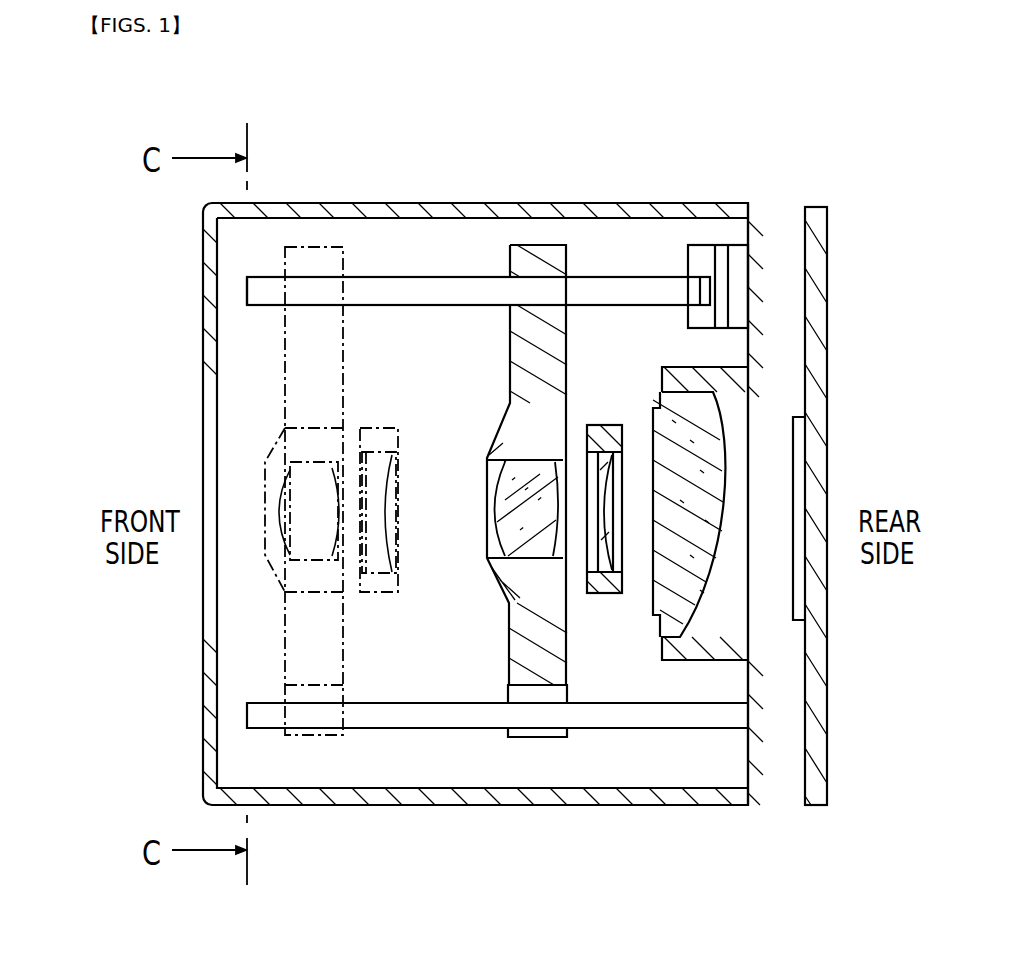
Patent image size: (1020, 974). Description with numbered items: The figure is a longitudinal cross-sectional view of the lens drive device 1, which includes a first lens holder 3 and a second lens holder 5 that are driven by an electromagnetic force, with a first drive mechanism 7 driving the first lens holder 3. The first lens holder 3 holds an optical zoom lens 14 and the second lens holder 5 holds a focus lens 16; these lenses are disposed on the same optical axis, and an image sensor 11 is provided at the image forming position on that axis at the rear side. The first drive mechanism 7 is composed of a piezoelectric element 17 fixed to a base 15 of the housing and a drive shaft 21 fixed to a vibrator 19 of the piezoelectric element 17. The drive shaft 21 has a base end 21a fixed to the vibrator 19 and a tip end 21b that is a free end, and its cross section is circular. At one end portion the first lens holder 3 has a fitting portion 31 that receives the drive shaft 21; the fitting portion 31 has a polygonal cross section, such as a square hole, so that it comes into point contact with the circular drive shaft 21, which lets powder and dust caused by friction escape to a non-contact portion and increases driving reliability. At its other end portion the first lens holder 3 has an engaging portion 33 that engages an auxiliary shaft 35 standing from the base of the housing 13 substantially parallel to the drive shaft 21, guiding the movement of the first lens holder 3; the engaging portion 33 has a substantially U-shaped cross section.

The lens drive device 1 is at (356, 166).
The first lens holder 3 is at (515, 245).
The second lens holder 5 is at (398, 508).
The first drive mechanism 7 is at (638, 248).
The image sensor 11 is at (798, 466).
The housing 13 is at (282, 200).
The optical zoom lens 14 is at (492, 546).
The base 15 is at (757, 252).
The focus lens 16 is at (612, 518).
The piezoelectric element 17 is at (720, 250).
The vibrator 19 is at (757, 278).
The drive shaft 21 is at (588, 277).
The base end 21a is at (700, 297).
The tip end 21b is at (247, 290).
The fitting portion 31 is at (532, 310).
The engaging portion 33 is at (538, 737).
The auxiliary shaft 35 is at (651, 718).